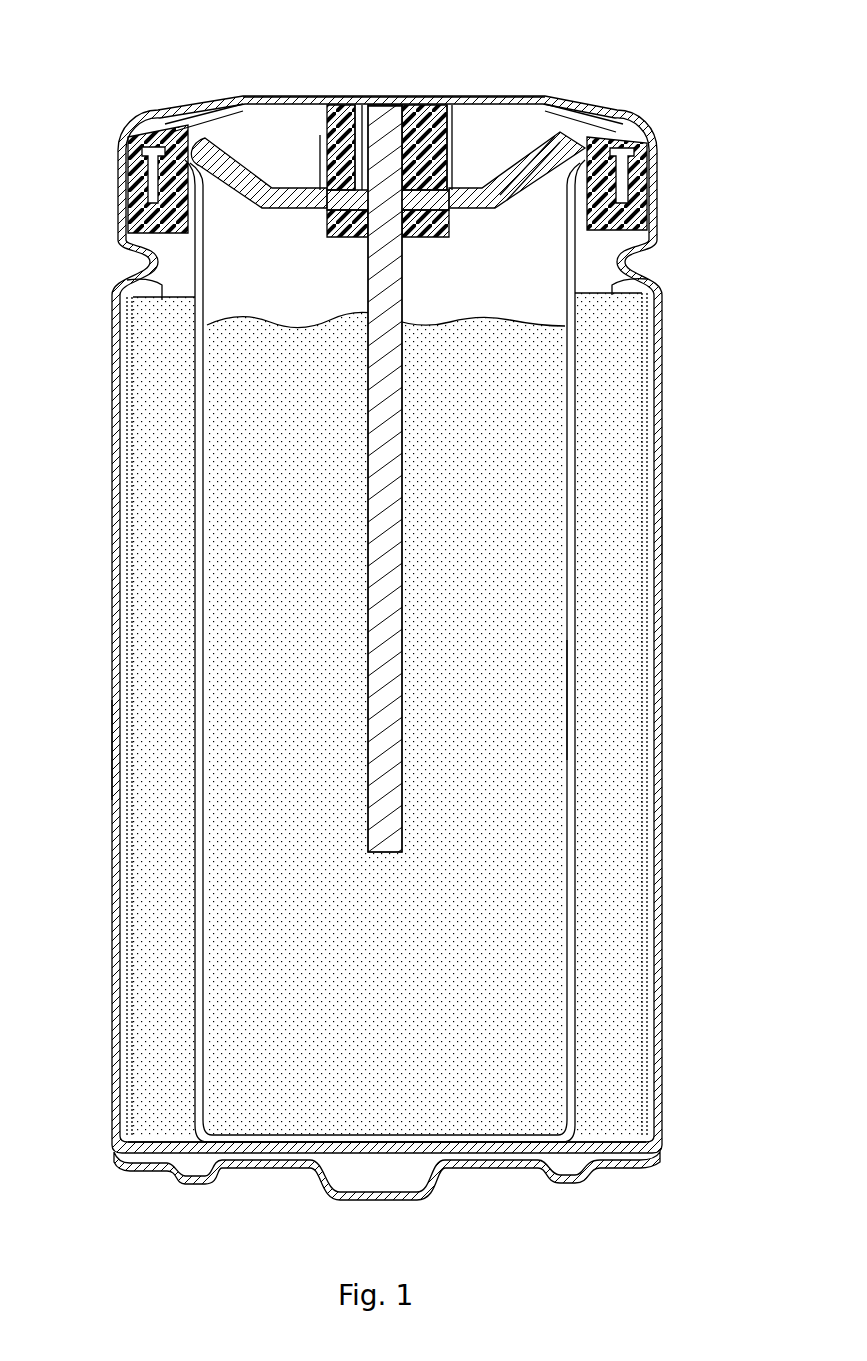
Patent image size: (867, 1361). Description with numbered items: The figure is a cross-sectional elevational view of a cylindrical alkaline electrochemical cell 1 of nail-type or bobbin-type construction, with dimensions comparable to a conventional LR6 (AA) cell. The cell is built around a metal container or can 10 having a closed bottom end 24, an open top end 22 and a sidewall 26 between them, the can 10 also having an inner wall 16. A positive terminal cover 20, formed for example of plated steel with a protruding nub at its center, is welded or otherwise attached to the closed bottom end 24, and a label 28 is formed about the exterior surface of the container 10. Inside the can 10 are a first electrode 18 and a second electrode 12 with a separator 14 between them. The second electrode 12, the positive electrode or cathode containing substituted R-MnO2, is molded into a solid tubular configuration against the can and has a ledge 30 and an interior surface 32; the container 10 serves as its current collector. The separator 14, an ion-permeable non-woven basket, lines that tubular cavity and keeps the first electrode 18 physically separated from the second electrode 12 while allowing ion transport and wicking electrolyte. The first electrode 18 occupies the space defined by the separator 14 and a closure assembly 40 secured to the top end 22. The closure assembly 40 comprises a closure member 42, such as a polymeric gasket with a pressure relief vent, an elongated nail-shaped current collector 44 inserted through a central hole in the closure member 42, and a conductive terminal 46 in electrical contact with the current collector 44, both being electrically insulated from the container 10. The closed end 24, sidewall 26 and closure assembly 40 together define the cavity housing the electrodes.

The electrochemical cell 1 is at (662, 526).
The container 10 is at (662, 402).
The second electrode 12 is at (610, 842).
The separator 14 is at (590, 935).
The inner wall 16 is at (618, 282).
The first electrode 18 is at (470, 745).
The terminal cover 20 is at (467, 1170).
The top end 22 is at (572, 100).
The closed bottom end 24 is at (293, 1153).
The sidewall 26 is at (114, 748).
The label 28 is at (118, 522).
The ledge 30 is at (162, 290).
The interior surface 32 is at (575, 700).
The closure assembly 40 is at (507, 163).
The closure member 42 is at (260, 158).
The current collector 44 is at (395, 665).
The conductive terminal 46 is at (402, 97).